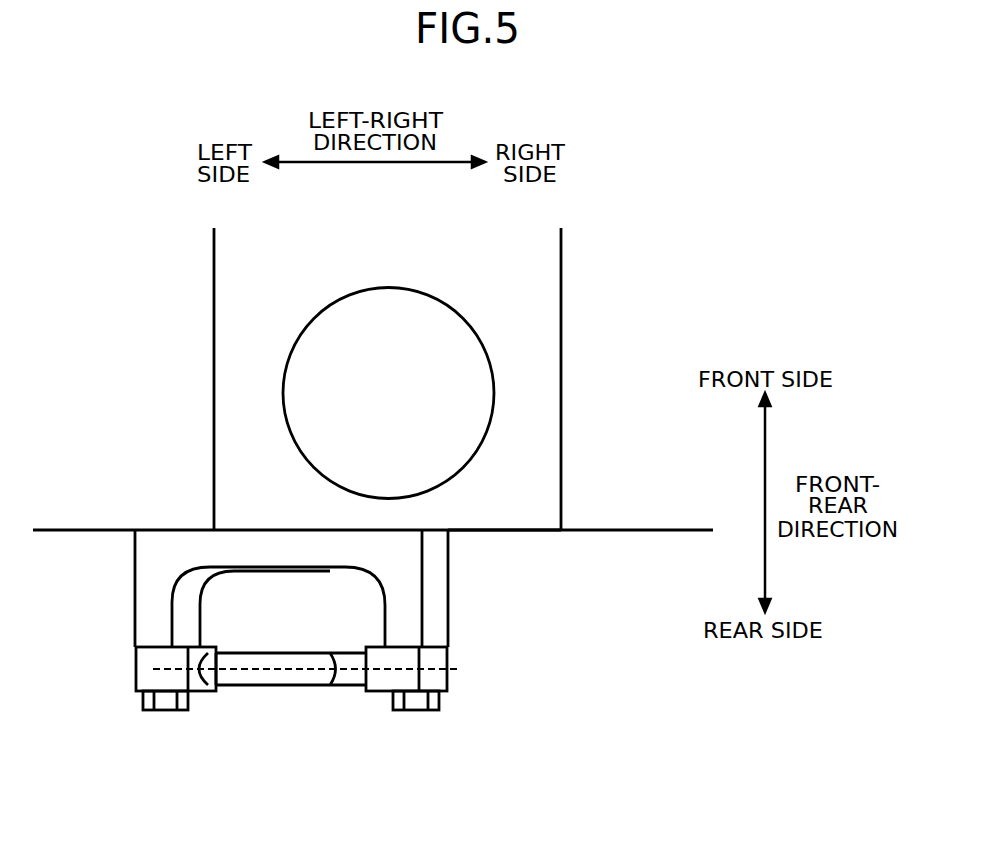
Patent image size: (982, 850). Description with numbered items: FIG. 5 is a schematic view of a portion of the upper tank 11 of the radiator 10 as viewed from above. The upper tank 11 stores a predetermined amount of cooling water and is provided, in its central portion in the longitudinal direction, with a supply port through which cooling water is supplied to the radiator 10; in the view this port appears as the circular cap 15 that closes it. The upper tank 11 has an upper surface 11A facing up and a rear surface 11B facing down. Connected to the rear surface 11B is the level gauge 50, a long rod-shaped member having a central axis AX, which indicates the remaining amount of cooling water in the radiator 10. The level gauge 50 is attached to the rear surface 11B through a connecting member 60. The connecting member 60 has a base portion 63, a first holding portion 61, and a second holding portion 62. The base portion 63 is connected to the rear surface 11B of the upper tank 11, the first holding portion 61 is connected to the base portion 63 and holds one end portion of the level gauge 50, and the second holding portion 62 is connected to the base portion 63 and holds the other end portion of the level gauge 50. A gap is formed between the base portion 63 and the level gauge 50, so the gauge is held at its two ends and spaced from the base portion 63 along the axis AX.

The radiator 10 is at (373, 568).
The upper tank 11 is at (617, 532).
The upper surface 11A is at (594, 366).
The rear surface 11B is at (518, 532).
The cap 15 is at (460, 330).
The level gauge 50 is at (296, 693).
The connecting member 60 is at (126, 567).
The first holding portion 61 is at (438, 628).
The second holding portion 62 is at (134, 633).
The base portion 63 is at (290, 549).
The central axis AX is at (248, 672).